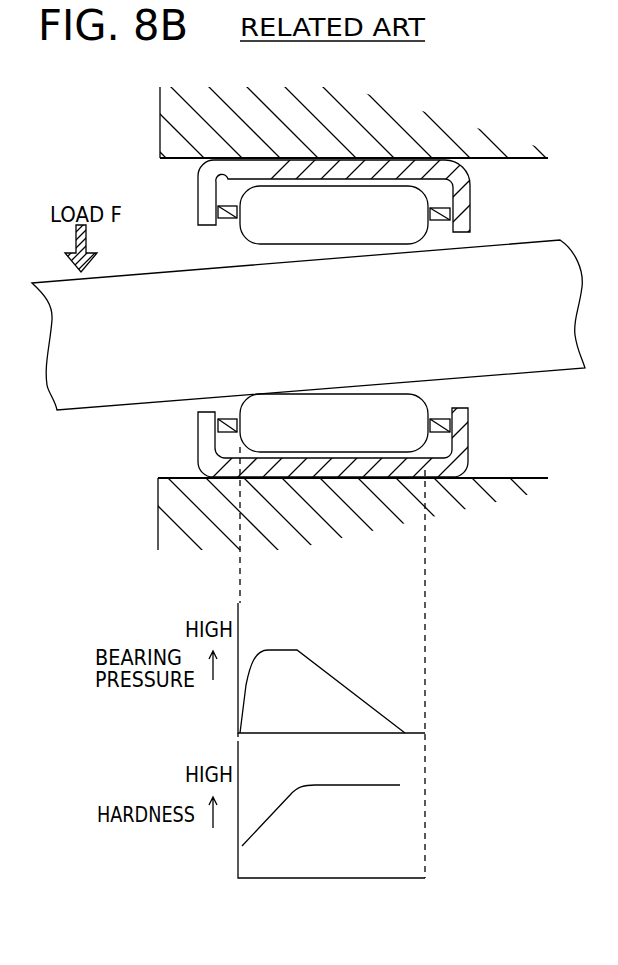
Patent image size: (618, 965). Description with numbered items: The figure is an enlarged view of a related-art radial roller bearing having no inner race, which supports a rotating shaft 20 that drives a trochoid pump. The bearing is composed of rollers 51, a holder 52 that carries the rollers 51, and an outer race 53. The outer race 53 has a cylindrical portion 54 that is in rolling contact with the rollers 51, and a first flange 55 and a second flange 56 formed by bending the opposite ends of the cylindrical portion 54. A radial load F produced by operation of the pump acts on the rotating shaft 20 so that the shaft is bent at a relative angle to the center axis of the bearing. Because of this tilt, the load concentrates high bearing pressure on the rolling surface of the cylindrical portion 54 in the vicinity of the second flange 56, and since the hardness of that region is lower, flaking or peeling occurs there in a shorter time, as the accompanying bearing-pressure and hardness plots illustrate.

The rotating shaft 20 is at (88, 400).
The rollers 51 is at (262, 228).
The holder 52 is at (198, 200).
The outer race 53 is at (345, 150).
The cylindrical portion 54 is at (360, 467).
The first flange 55 is at (468, 428).
The second flange 56 is at (198, 436).